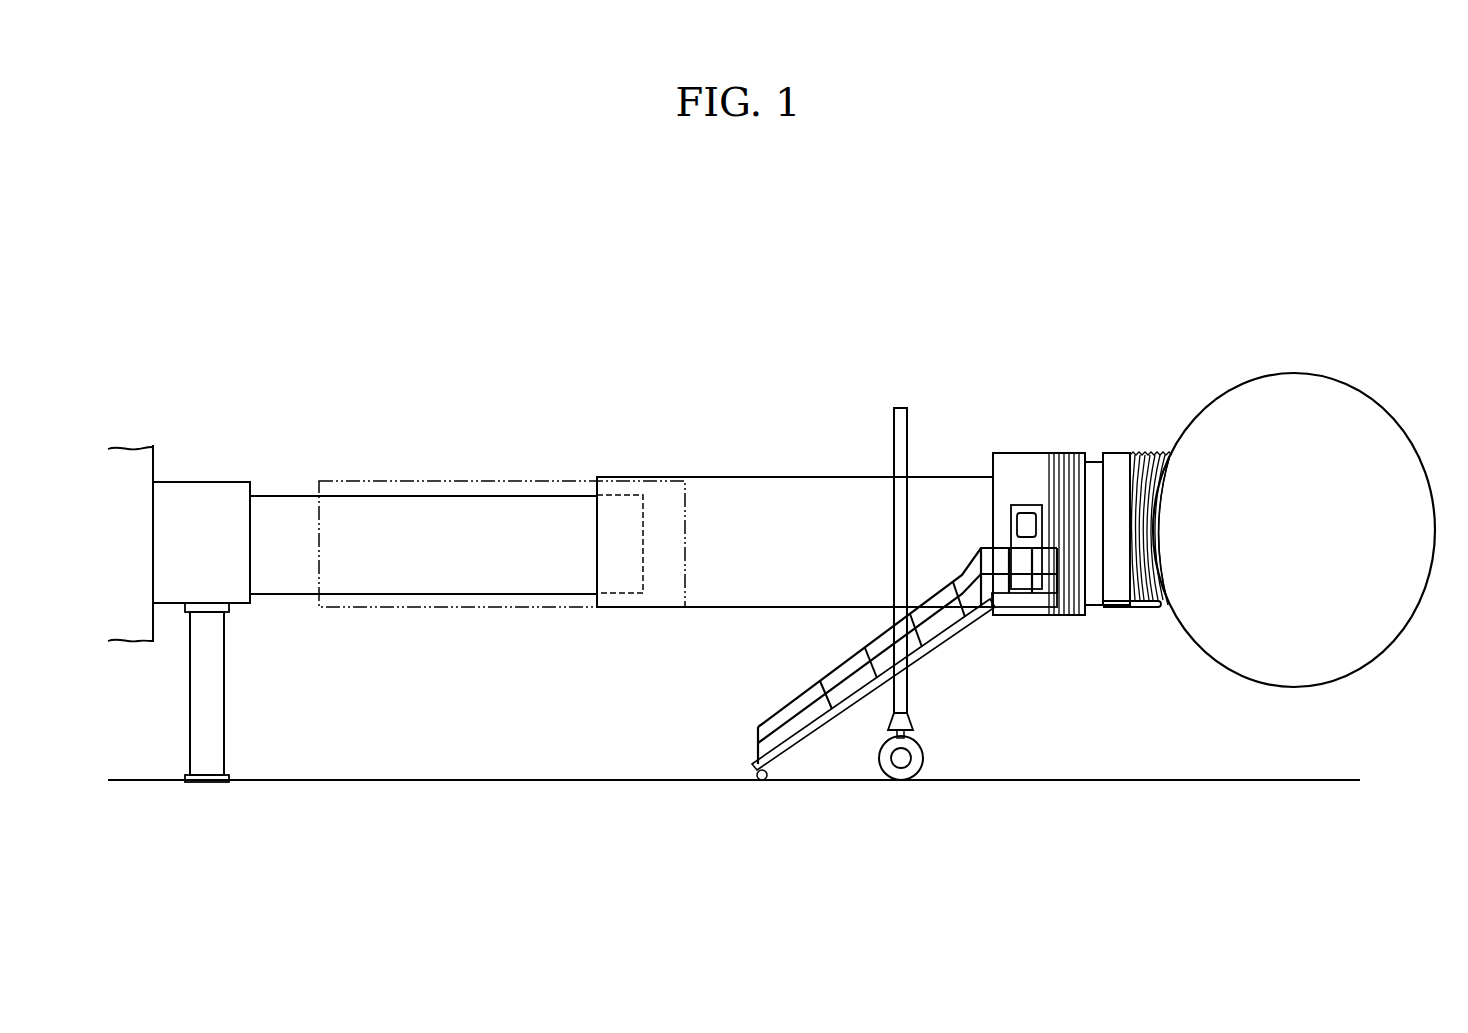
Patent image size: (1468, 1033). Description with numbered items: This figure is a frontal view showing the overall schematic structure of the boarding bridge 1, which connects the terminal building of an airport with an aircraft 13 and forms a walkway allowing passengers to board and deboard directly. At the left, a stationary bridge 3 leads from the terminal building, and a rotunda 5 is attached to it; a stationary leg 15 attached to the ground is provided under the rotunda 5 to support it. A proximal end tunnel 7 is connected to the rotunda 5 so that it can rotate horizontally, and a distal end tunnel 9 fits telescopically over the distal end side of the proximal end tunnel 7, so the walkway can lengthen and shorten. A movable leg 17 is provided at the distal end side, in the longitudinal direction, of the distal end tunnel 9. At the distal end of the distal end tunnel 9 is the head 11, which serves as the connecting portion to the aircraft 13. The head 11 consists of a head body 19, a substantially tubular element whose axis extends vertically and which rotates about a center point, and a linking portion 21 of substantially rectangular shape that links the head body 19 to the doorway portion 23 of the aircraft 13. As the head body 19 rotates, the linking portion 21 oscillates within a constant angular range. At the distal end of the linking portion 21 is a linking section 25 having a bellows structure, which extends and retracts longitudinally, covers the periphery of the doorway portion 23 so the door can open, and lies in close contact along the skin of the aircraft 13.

The boarding bridge 1 is at (850, 242).
The stationary bridge 3 is at (130, 454).
The rotunda 5 is at (210, 480).
The proximal end tunnel 7 is at (265, 495).
The distal end tunnel 9 is at (490, 478).
The head 11 is at (1073, 403).
The aircraft 13 is at (1353, 383).
The stationary leg 15 is at (226, 700).
The movable leg 17 is at (910, 700).
The head body 19 is at (1033, 452).
The linking portion 21 is at (1118, 452).
The doorway portion 23 is at (1157, 517).
The linking section 25 is at (1152, 453).